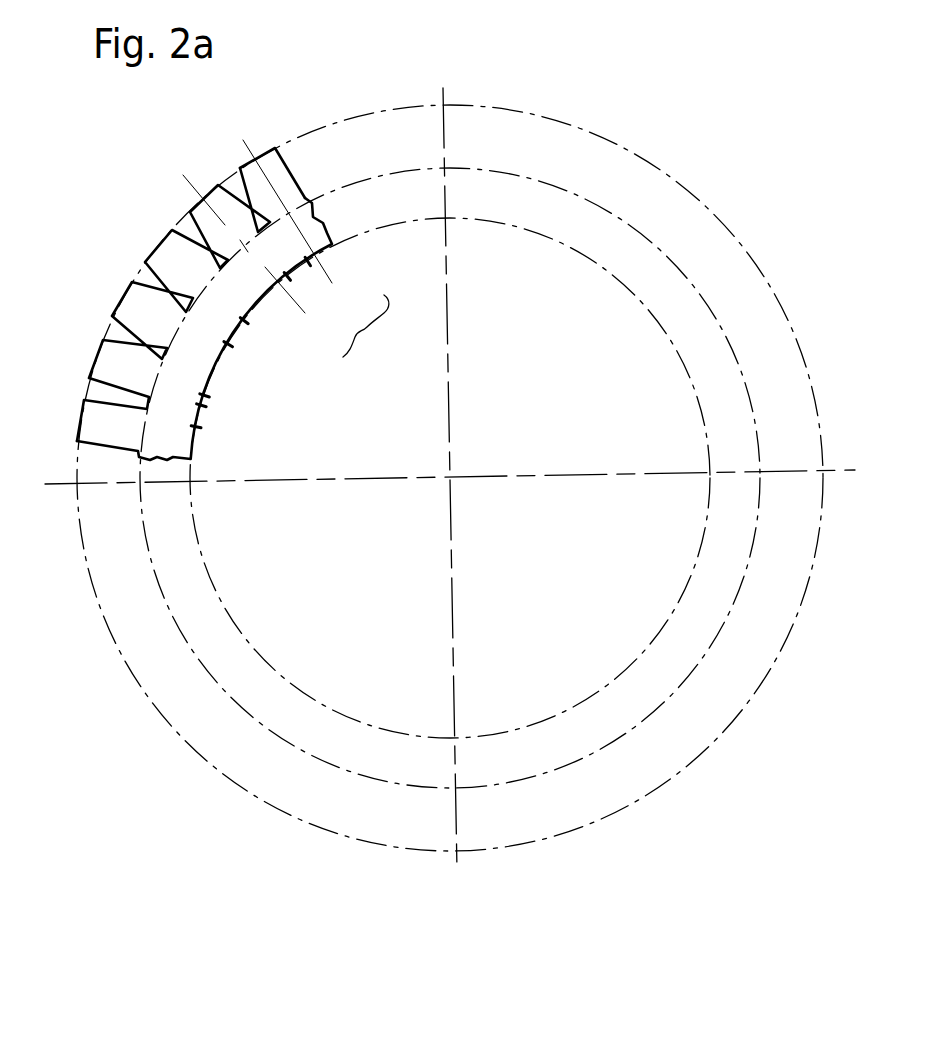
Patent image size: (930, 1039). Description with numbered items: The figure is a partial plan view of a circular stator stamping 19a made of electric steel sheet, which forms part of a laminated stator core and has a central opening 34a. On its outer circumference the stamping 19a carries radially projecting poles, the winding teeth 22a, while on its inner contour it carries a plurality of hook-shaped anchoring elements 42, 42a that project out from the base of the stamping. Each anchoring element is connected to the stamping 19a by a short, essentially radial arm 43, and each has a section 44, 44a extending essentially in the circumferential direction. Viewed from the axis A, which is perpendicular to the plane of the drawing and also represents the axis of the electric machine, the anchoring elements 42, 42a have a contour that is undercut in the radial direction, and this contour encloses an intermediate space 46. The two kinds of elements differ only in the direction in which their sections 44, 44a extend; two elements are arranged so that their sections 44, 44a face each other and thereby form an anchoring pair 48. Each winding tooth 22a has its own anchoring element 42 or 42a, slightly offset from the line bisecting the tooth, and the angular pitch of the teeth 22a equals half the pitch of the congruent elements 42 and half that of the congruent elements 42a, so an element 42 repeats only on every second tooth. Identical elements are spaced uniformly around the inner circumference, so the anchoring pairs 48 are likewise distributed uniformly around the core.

The stator stamping 19a is at (222, 130).
The winding tooth 22a is at (270, 151).
The anchoring element 42 is at (291, 281).
The anchoring element 42a is at (311, 266).
The radial arm 43 is at (206, 395).
The circumferential section 44 is at (206, 405).
The circumferential section 44a is at (200, 428).
The intermediate space 46 is at (234, 342).
The anchoring pair 48 is at (370, 326).
The central opening 34a is at (554, 451).
The axis A is at (451, 479).